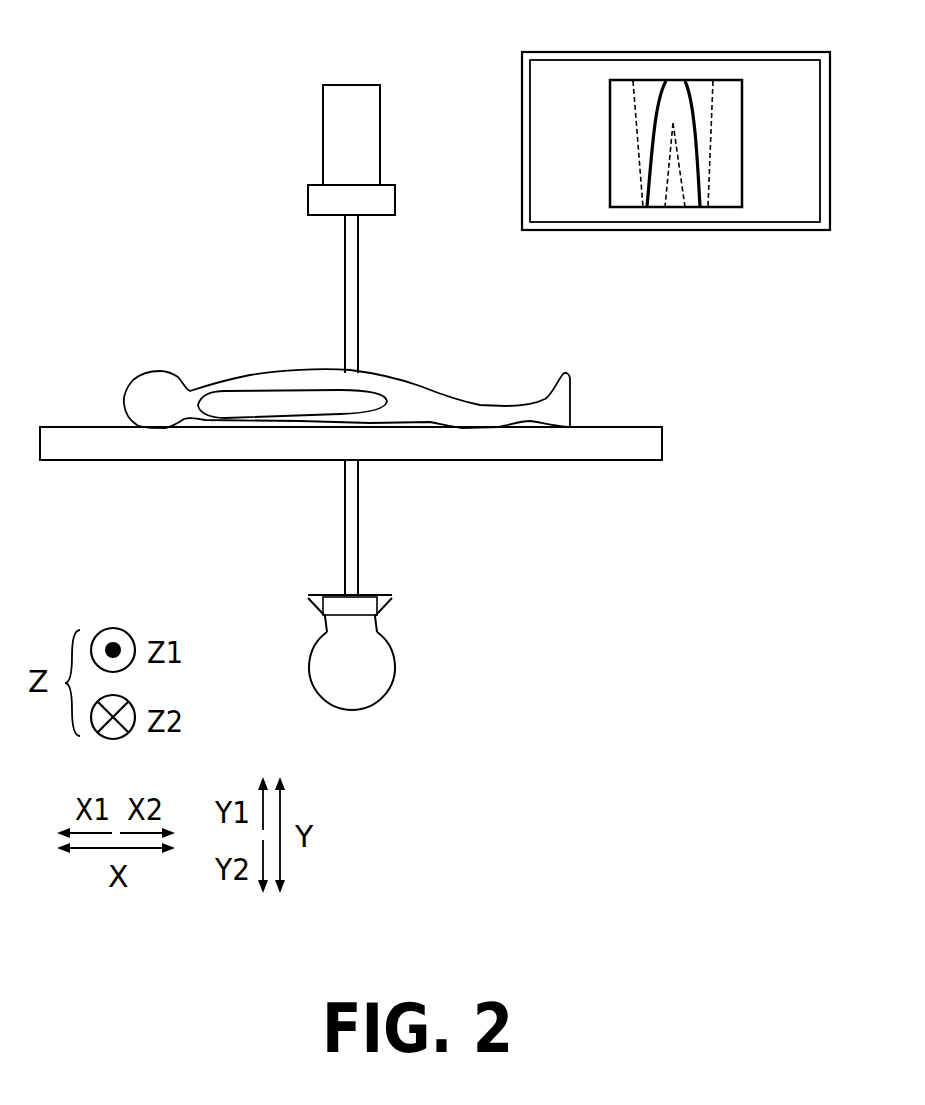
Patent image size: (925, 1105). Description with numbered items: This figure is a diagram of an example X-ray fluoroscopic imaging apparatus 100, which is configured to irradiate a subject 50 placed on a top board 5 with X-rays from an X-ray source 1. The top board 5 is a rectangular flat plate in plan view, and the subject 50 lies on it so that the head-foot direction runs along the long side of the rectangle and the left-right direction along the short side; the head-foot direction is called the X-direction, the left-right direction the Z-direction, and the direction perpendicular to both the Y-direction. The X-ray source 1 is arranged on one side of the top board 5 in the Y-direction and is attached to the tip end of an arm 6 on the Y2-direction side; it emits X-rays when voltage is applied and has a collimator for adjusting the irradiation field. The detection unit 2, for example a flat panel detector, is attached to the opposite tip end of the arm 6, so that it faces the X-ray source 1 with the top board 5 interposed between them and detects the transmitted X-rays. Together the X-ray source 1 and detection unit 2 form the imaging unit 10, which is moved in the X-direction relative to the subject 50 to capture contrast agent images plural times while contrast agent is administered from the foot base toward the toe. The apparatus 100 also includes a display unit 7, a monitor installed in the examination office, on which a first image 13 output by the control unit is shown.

The X-ray fluoroscopic imaging apparatus 100 is at (256, 74).
The imaging unit 10 is at (269, 172).
The X-ray source 1 is at (380, 690).
The detection unit 2 is at (396, 200).
The top board 5 is at (664, 443).
The arm 6 is at (360, 272).
The display unit 7 is at (831, 113).
The first image 13 is at (742, 125).
The subject 50 is at (575, 395).